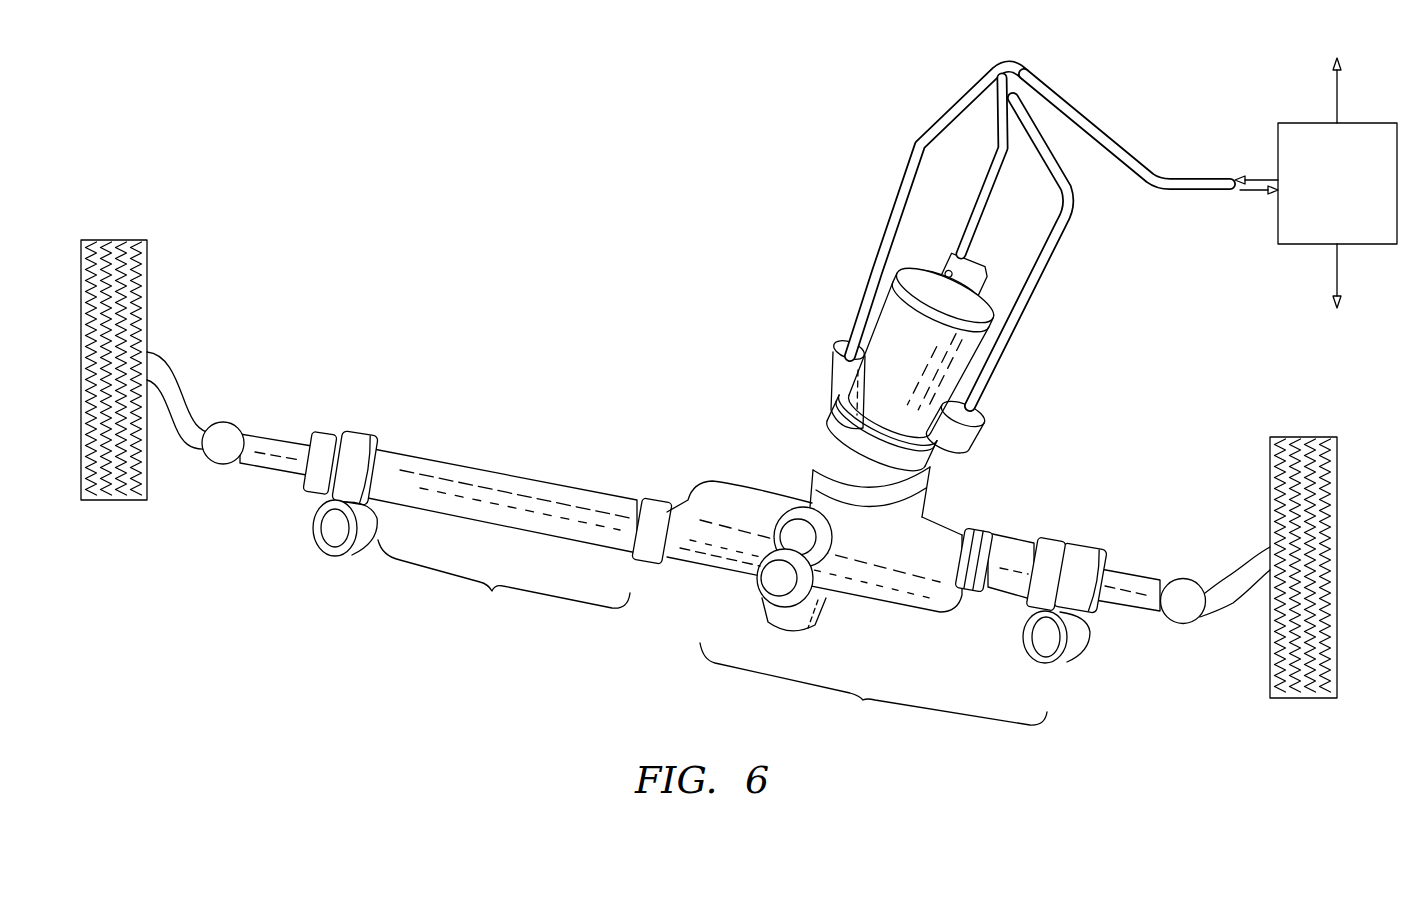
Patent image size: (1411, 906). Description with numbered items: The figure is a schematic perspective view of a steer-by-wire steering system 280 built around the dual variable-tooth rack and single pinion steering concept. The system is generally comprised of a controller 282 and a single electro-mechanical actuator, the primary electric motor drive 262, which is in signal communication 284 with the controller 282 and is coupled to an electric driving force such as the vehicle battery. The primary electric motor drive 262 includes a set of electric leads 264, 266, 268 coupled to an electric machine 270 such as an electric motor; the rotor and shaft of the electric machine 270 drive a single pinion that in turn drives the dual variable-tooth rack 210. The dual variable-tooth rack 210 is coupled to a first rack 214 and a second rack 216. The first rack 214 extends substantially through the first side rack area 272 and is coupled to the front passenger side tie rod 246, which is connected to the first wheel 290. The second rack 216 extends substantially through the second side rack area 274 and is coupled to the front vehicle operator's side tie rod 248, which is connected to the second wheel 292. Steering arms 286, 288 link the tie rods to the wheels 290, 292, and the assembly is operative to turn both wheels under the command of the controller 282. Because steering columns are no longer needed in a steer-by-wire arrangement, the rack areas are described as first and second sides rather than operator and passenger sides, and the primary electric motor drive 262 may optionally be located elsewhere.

The dual variable-tooth rack 210 is at (705, 585).
The first rack 214 is at (706, 566).
The second rack 216 is at (962, 530).
The front passenger side tie rod 246 is at (270, 442).
The front vehicle operator's side tie rod 248 is at (1145, 575).
The primary electric motor drive 262 is at (977, 273).
The electric lead 264 is at (927, 133).
The electric lead 266 is at (1000, 143).
The electric lead 268 is at (1072, 225).
The electric machine 270 is at (966, 367).
The first side rack area 272 is at (487, 533).
The second side rack area 274 is at (857, 603).
The steer-by-wire steering system 280 is at (874, 269).
The controller 282 is at (1318, 200).
The signal communication 284 is at (1106, 128).
The steering arm 286 is at (167, 360).
The steering arm 288 is at (1246, 562).
The first wheel 290 is at (114, 240).
The second wheel 292 is at (1300, 437).